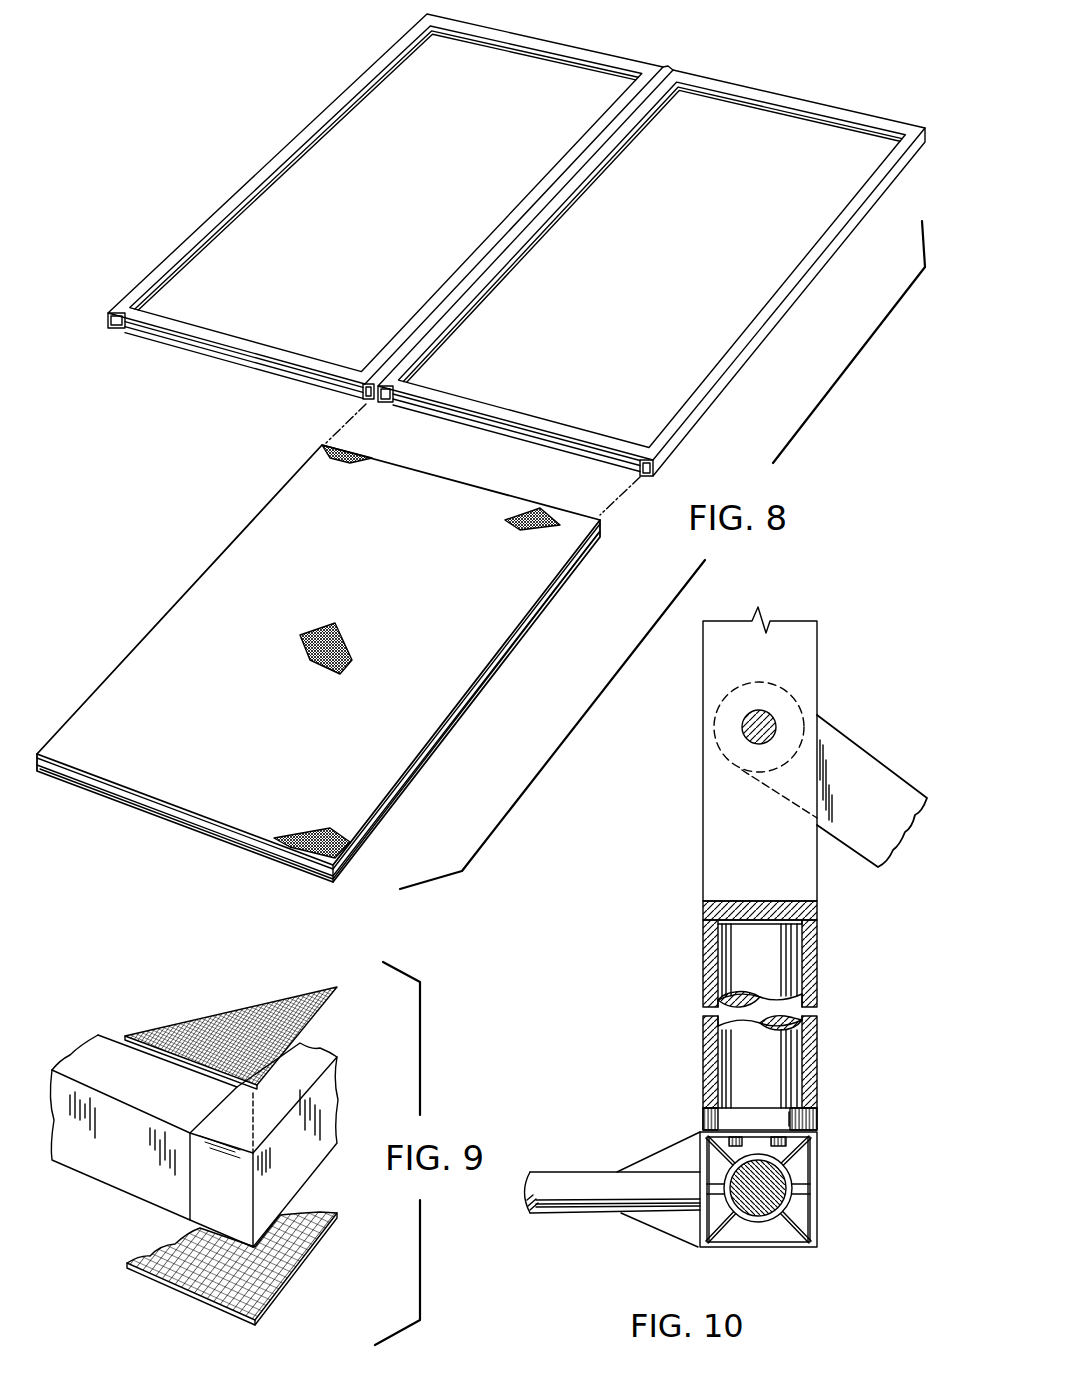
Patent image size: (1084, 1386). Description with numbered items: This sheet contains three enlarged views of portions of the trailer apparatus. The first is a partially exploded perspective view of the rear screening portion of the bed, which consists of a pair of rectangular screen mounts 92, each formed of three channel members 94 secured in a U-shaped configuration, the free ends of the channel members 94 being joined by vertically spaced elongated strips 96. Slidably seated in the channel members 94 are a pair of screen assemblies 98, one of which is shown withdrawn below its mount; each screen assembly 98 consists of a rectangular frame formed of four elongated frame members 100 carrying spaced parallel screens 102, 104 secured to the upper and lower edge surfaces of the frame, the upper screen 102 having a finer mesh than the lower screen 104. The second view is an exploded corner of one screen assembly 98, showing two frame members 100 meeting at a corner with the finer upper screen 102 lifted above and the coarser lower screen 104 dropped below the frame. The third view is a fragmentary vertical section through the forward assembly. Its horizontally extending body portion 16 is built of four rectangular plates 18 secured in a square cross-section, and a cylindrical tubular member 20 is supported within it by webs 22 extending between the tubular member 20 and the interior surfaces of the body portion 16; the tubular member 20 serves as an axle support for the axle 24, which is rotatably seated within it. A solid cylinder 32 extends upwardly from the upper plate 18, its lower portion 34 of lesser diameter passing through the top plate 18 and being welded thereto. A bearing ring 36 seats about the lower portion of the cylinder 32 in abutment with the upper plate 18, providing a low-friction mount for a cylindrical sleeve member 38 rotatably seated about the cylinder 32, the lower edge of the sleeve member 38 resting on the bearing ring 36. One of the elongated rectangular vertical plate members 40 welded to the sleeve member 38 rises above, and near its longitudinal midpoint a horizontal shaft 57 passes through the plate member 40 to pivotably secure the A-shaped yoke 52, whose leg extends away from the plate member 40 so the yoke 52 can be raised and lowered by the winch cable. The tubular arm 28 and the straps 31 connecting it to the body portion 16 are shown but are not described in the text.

In FIG. 10, the body portion 16 is at (767, 1199).
In FIG. 10, the rectangular plates 18 is at (718, 1135).
In FIG. 10, the cylindrical tubular member 20 is at (757, 1228).
In FIG. 10, the webs 22 is at (727, 1240).
In FIG. 10, the axle 24 is at (793, 1202).
In FIG. 10, the tubular arm 28 is at (572, 1214).
In FIG. 10, the strap 31 is at (661, 1148).
In FIG. 10, the solid cylinder 32 is at (733, 952).
In FIG. 10, the lower portion 34 is at (776, 1150).
In FIG. 10, the bearing ring 36 is at (817, 1118).
In FIG. 10, the cylindrical sleeve member 38 is at (814, 937).
In FIG. 10, the vertical plate members 40 is at (735, 856).
In FIG. 10, the yoke 52 is at (853, 736).
In FIG. 10, the horizontal shaft 57 is at (746, 718).
In FIG. 8, the screen mounts 92 is at (186, 228).
In FIG. 8, the channel members 94 is at (594, 52).
In FIG. 8, the elongated strips 96 is at (236, 348).
In FIG. 8, the screen assemblies 98 is at (494, 682).
In FIG. 8, the frame members 100 is at (268, 850).
In FIG. 9, the frame members 100 is at (328, 1103).
In FIG. 8, the upper screen 102 is at (273, 763).
In FIG. 9, the upper screen 102 is at (330, 1002).
In FIG. 8, the lower screen 104 is at (188, 831).
In FIG. 9, the lower screen 104 is at (303, 1250).